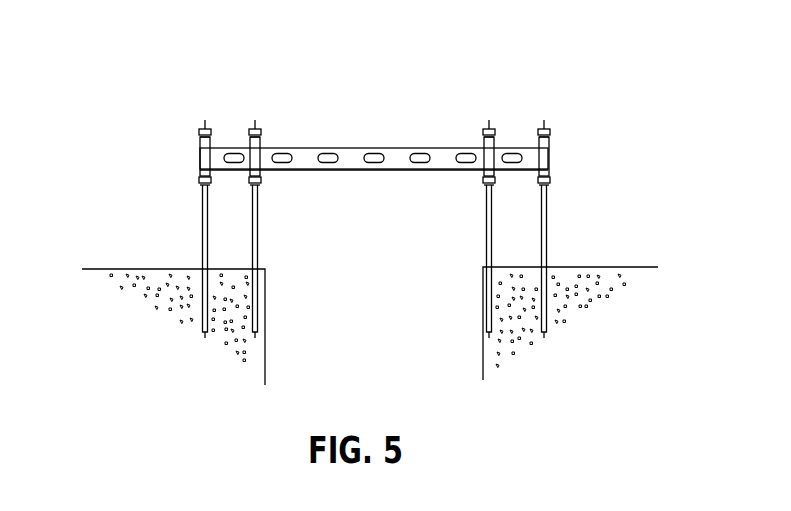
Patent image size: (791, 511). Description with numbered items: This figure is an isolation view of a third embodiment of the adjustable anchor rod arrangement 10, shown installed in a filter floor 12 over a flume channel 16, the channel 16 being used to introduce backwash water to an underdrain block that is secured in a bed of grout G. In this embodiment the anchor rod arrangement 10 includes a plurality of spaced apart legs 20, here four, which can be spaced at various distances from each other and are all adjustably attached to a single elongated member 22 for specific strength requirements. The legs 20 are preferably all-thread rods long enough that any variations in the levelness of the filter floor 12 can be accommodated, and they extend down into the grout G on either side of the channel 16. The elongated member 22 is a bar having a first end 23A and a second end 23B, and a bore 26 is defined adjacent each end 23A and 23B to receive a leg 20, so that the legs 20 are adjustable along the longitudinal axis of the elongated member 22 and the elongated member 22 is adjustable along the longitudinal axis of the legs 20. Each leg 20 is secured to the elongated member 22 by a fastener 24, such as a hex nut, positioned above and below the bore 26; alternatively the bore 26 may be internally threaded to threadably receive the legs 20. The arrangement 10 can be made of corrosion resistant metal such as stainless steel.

The adjustable anchor rod arrangement 10 is at (202, 202).
The filter floor 12 is at (117, 268).
The channel 16 is at (375, 329).
The legs 20 is at (255, 250).
The elongated member 22 is at (336, 148).
The first end 23A is at (212, 143).
The second end 23B is at (609, 111).
The fastener 24 is at (550, 127).
The bore 26 is at (550, 158).
The grout G is at (580, 317).